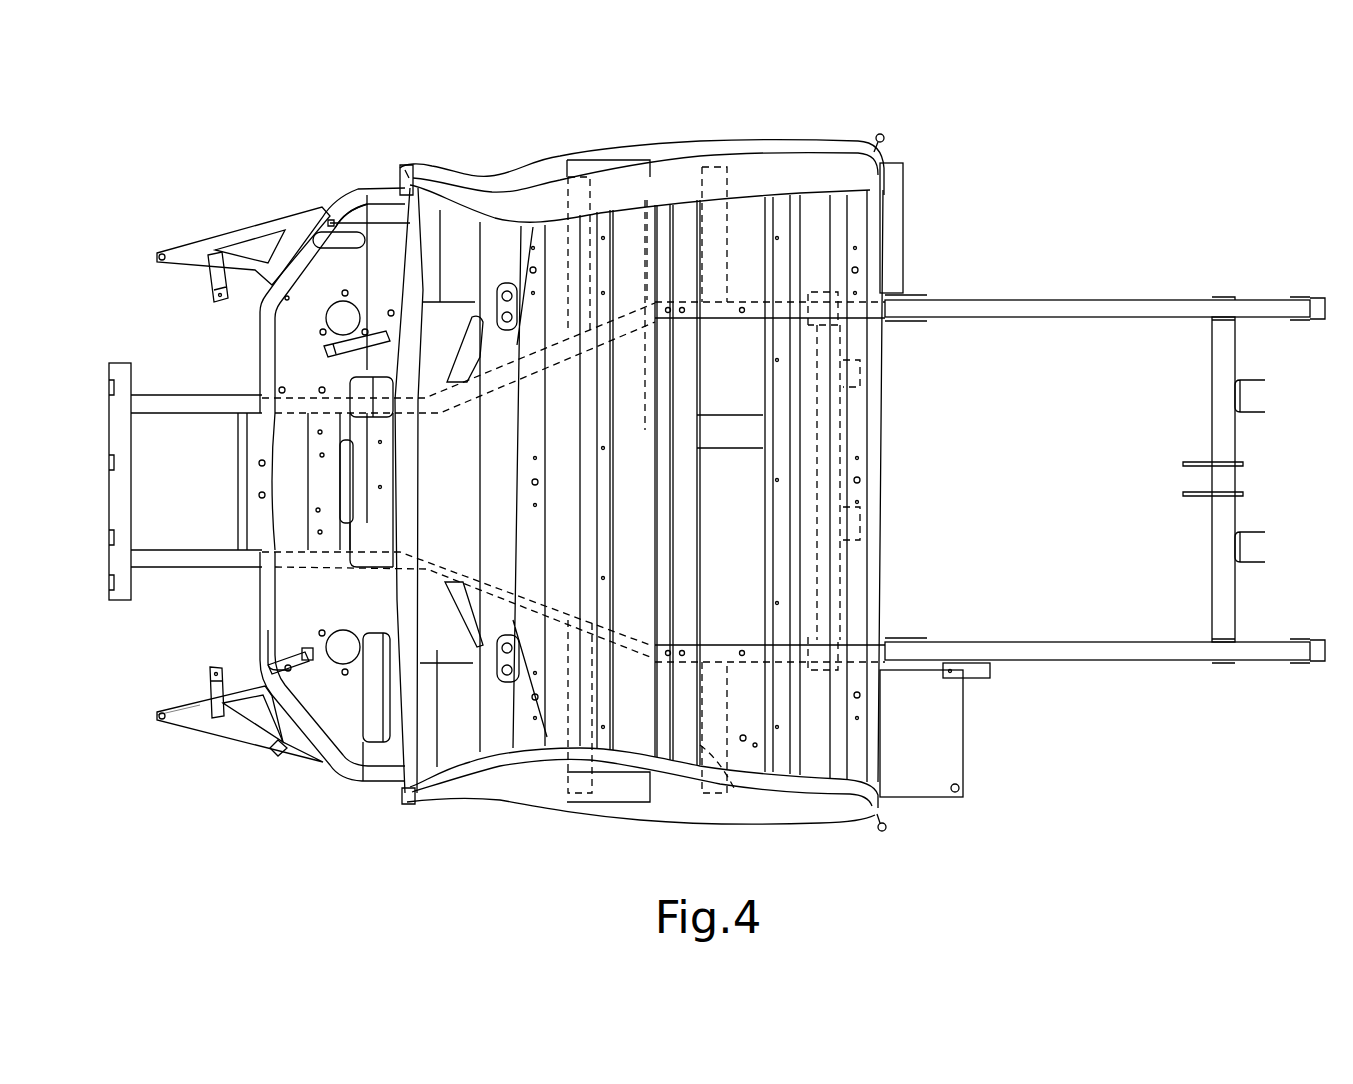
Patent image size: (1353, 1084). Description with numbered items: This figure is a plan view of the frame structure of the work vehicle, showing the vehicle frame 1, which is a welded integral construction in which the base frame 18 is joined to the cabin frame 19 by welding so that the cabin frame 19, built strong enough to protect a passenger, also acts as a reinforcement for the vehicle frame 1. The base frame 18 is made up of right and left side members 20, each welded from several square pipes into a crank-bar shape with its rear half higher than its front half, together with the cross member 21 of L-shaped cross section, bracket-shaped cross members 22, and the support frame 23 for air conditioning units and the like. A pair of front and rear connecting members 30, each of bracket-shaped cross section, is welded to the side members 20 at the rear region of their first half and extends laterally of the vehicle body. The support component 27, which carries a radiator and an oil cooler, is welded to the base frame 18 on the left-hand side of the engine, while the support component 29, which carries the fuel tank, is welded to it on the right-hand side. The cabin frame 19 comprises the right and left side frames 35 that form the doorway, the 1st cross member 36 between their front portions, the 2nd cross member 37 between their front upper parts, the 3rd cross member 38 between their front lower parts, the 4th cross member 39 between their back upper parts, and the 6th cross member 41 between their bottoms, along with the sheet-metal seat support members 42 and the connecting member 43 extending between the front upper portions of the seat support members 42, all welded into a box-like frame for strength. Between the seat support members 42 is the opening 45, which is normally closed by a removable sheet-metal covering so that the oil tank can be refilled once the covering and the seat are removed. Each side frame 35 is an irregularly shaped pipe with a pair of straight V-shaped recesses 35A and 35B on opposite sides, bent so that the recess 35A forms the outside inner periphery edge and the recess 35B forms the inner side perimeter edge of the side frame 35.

The vehicle frame 1 is at (1148, 150).
The base frame 18 is at (1055, 664).
The cabin frame 19 is at (475, 155).
The side member 20 is at (195, 565).
The cross member 21 is at (130, 510).
The bracket shaped cross member 22 is at (312, 478).
The support frame 23 is at (308, 738).
The support component 27 is at (922, 797).
The support component 29 is at (903, 210).
The connecting member 30 is at (570, 205).
The side frame 35 is at (780, 140).
The V-shaped recess 35A is at (610, 157).
The V-shaped recess 35B is at (527, 218).
The 1st cross member 36 is at (405, 745).
The 2nd cross member 37 is at (487, 455).
The 3rd cross member 38 is at (438, 752).
The 4th cross member 39 is at (862, 429).
The 6th cross member 41 is at (623, 798).
The seat support member 42 is at (712, 285).
The connecting member 43 is at (667, 481).
The opening 45 is at (745, 545).